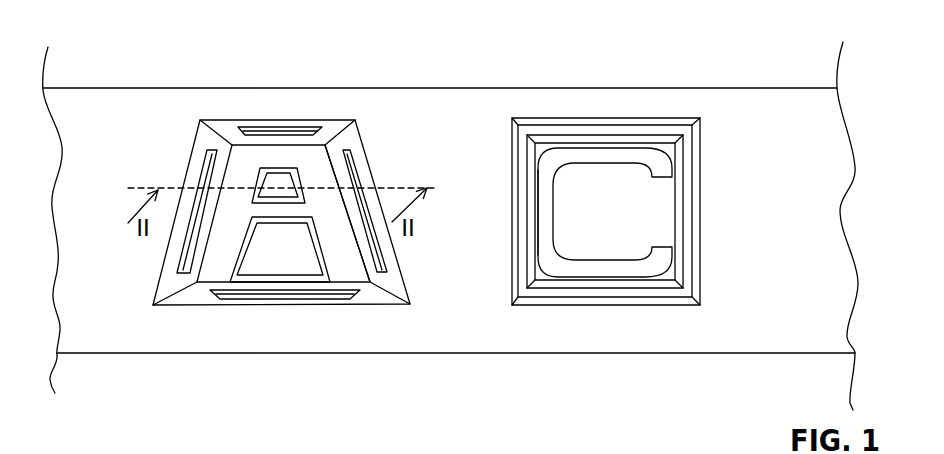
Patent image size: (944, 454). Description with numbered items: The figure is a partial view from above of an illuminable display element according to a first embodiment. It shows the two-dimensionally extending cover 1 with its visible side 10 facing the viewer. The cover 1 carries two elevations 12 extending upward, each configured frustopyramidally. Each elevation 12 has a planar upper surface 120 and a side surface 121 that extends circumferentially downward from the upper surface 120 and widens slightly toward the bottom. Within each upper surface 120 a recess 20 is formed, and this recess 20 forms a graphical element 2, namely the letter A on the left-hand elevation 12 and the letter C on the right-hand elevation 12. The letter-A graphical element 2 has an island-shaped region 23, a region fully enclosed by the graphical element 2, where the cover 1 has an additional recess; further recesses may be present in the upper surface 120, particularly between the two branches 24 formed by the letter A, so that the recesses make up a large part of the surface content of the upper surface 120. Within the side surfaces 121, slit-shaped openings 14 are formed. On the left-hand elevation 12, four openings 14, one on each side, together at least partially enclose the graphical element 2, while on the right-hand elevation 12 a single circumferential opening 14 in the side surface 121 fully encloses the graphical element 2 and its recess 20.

The cover 1 is at (125, 118).
The visible side 10 is at (88, 218).
The graphical element 2 is at (247, 163).
The island-shaped region 23 is at (277, 175).
The opening 14 is at (348, 165).
The elevation 12 is at (385, 167).
The branch 24 is at (325, 238).
The upper surface 120 is at (232, 238).
The recess 20 is at (343, 260).
The side surface 121 is at (373, 295).